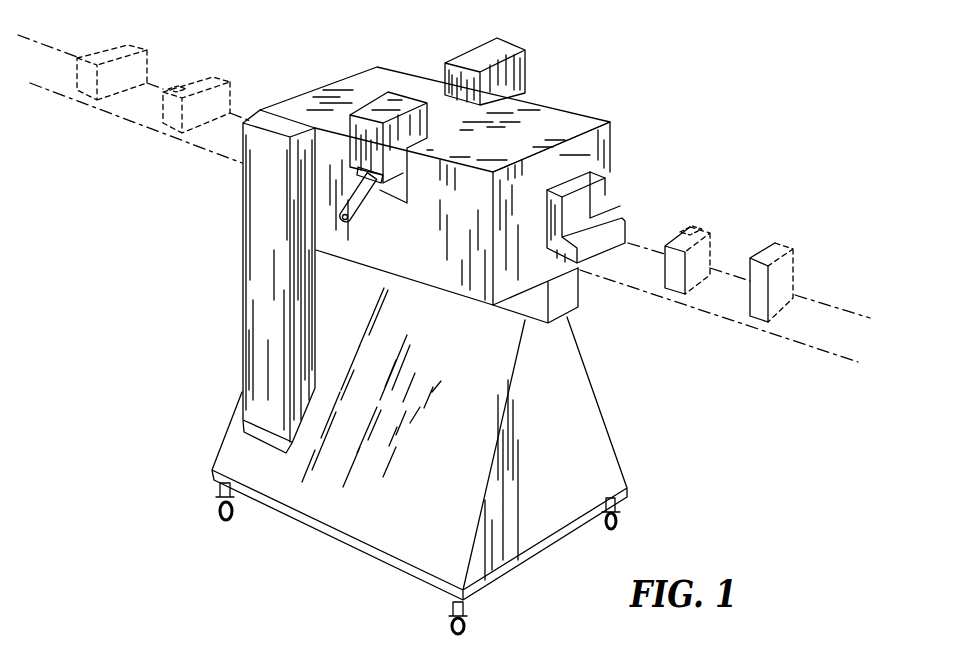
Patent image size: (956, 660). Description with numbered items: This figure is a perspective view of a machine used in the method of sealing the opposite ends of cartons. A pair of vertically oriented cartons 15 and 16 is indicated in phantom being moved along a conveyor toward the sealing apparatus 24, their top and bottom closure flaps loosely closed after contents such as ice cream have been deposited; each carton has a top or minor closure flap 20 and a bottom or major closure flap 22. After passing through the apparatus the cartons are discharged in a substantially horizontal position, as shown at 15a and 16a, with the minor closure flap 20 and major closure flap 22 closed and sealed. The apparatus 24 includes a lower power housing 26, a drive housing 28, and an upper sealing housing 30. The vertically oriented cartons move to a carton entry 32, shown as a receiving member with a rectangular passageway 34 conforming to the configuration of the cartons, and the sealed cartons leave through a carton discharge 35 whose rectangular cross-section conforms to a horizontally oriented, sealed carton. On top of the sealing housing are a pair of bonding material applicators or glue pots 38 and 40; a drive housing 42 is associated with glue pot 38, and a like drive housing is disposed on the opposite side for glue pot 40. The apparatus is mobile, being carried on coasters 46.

The discharged carton 15a is at (128, 50).
The discharged carton 16a is at (213, 76).
The carton 15 is at (678, 288).
The carton 16 is at (760, 307).
The top or minor closure flap 20 is at (162, 104).
The bottom or major closure flap 22 is at (173, 128).
The sealing apparatus 24 is at (380, 44).
The lower power housing 26 is at (345, 525).
The drive housing 28 is at (243, 297).
The upper sealing housing 30 is at (568, 123).
The carton entry 32 is at (590, 175).
The rectangular passageway 34 is at (578, 208).
The carton discharge 35 is at (293, 88).
The glue pot 38 is at (405, 100).
The glue pot 40 is at (524, 46).
The drive housing 42 is at (367, 221).
The coasters 46 is at (222, 512).